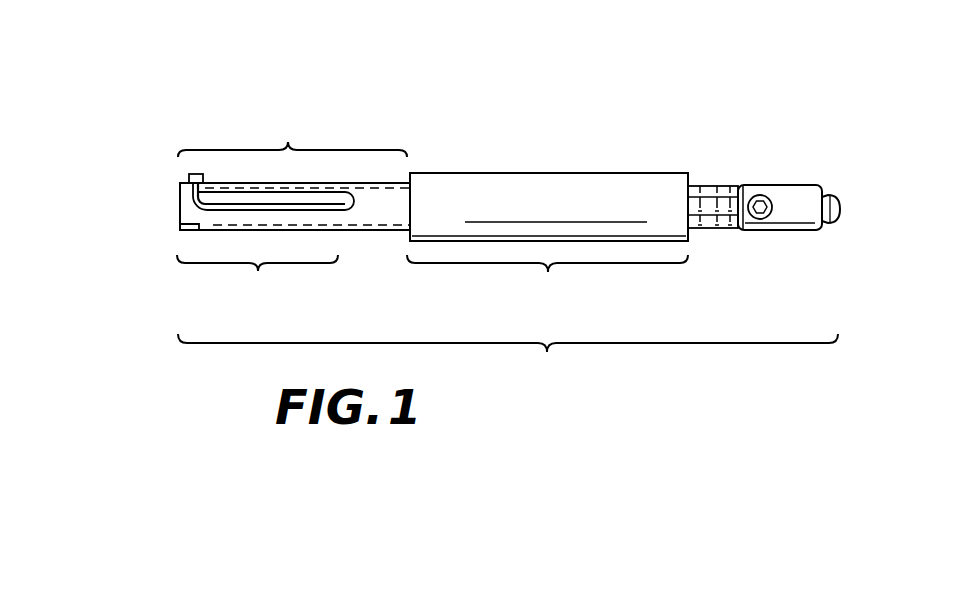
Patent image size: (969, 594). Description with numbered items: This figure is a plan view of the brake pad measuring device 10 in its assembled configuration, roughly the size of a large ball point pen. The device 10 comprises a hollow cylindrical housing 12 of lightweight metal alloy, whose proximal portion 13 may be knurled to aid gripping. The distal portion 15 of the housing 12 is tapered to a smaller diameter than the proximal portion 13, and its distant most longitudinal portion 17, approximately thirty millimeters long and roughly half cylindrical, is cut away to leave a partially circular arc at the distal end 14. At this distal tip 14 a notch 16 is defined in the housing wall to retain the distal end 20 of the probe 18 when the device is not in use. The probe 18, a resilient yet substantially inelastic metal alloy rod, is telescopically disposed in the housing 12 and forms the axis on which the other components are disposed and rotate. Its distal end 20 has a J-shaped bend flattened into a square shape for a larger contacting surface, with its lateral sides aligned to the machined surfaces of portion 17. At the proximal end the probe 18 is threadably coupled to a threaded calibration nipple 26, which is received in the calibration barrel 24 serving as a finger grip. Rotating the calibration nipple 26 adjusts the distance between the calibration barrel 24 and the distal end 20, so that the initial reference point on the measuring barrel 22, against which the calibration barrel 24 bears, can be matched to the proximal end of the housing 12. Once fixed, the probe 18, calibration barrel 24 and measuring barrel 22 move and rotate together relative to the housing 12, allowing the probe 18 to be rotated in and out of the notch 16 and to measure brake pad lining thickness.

The brake pad measuring device 10 is at (508, 360).
The hollow cylindrical housing 12 is at (557, 205).
The proximal portion 13 is at (547, 282).
The distal end 14 is at (180, 207).
The distal portion 15 is at (292, 130).
The notch 16 is at (180, 229).
The distant most longitudinal portion 17 is at (257, 282).
The probe 18 is at (297, 205).
The distal end of probe 20 is at (208, 175).
The measuring barrel 22 is at (705, 186).
The calibration barrel 24 is at (775, 185).
The threaded calibration nipple 26 is at (833, 228).